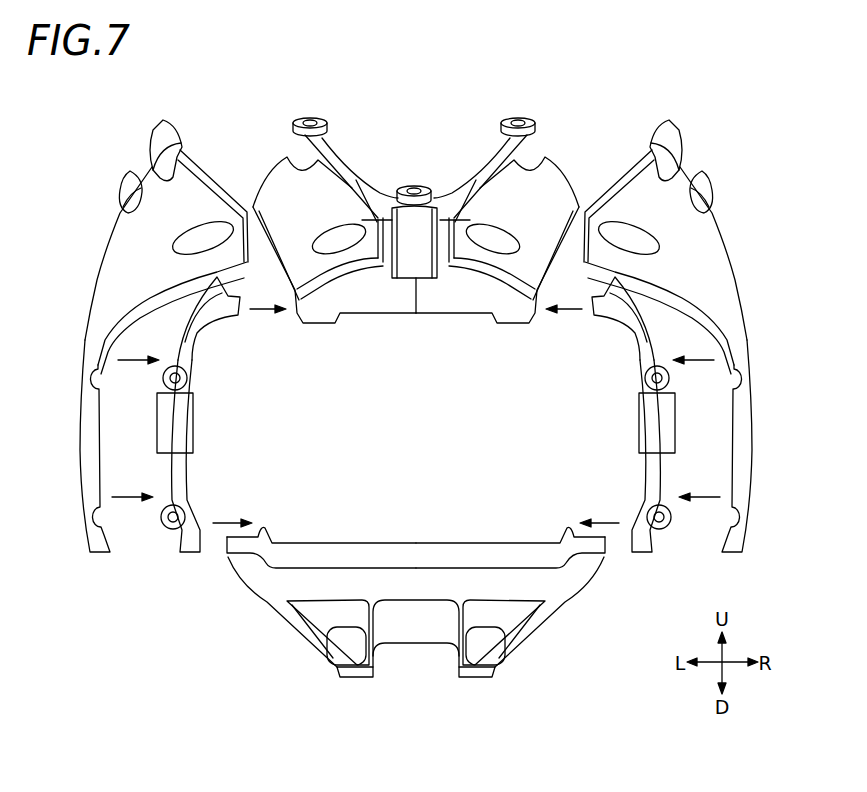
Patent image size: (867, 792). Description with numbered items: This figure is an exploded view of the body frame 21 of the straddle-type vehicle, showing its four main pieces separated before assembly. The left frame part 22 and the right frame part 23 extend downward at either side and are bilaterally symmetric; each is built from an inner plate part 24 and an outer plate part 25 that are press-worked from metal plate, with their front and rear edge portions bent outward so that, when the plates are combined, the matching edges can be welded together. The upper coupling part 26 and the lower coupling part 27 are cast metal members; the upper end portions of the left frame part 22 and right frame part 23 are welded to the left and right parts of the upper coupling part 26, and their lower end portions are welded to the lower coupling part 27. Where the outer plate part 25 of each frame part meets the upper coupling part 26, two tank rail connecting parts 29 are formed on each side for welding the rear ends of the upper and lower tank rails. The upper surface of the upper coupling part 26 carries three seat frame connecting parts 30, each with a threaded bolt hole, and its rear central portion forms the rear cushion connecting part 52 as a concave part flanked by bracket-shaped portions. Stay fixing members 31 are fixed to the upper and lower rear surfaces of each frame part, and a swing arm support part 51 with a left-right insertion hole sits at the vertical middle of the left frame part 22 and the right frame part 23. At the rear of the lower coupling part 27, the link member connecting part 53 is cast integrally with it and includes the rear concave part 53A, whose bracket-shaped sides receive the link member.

The body frame 21 is at (617, 110).
The left frame part 22 is at (93, 260).
The right frame part 23 is at (745, 242).
The inner plate part 24 is at (190, 470).
The outer plate part 25 is at (99, 427).
The upper coupling part 26 is at (360, 178).
The lower coupling part 27 is at (272, 592).
The tank rail connecting part 29 is at (156, 130).
The seat frame connecting part 30 is at (296, 124).
The stay fixing member 31 is at (163, 378).
The swing arm support part 51 is at (194, 418).
The rear cushion connecting part 52 is at (444, 256).
The link member connecting part 53 is at (335, 693).
The rear concave part 53A is at (437, 636).